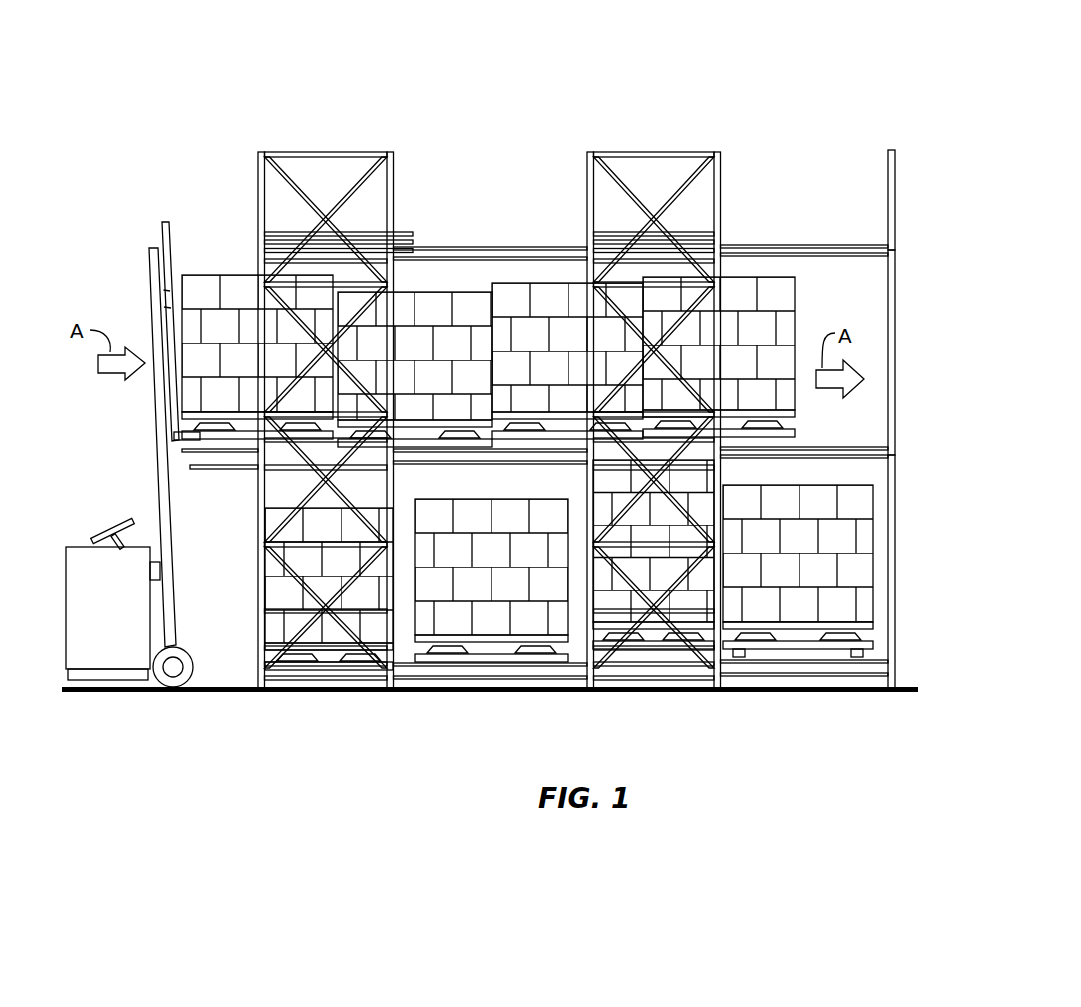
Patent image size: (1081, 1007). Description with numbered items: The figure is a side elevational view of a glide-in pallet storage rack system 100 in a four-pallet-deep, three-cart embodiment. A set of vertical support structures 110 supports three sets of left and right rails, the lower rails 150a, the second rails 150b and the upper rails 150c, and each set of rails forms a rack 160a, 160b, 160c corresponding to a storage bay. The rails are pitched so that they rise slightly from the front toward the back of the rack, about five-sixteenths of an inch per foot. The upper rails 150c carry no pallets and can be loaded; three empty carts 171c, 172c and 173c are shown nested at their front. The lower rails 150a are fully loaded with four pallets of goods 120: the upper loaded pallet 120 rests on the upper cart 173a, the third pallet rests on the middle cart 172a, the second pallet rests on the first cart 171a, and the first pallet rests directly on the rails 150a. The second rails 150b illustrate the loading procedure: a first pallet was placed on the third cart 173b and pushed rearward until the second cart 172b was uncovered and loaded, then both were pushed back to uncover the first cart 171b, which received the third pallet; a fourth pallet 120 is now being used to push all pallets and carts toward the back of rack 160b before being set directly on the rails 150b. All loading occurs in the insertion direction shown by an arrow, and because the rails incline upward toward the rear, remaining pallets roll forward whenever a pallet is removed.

The rack system 100 is at (155, 128).
The vertical support structures 110 is at (393, 152).
The pallet of goods 120 is at (200, 285).
The lower rails 150a is at (885, 670).
The second rails 150b is at (865, 447).
The upper rails 150c is at (865, 245).
The rack 160a is at (945, 558).
The rack 160b is at (945, 356).
The rack 160c is at (820, 175).
The first cart 171a is at (487, 662).
The middle cart 172a is at (640, 662).
The upper cart 173a is at (872, 642).
The first cart 171b is at (415, 452).
The second cart 172b is at (530, 450).
The third cart 173b is at (770, 440).
The cart 171c is at (413, 250).
The cart 172c is at (413, 242).
The cart 173c is at (413, 232).